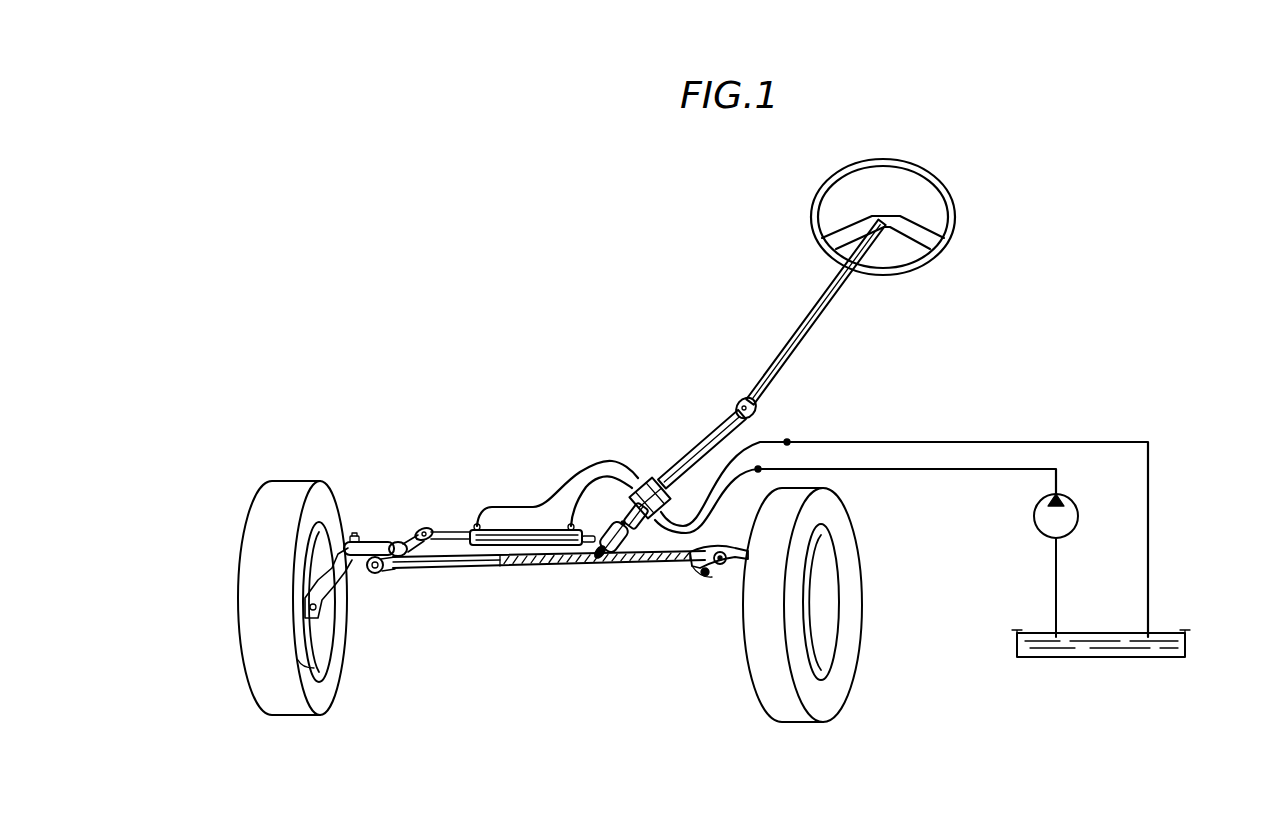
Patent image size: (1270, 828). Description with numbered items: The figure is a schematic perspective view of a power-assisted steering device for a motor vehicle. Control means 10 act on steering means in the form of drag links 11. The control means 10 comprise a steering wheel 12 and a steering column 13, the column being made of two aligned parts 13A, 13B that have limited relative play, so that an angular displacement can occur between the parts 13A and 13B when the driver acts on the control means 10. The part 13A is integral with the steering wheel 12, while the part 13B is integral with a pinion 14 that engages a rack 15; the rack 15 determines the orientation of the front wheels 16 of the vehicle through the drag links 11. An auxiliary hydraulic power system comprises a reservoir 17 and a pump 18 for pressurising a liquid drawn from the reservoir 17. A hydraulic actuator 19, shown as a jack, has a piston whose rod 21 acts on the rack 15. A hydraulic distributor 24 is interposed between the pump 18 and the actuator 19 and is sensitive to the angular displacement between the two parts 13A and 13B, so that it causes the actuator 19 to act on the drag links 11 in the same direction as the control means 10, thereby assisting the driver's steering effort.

The control means 10 is at (741, 360).
The drag links 11 is at (381, 538).
The steering wheel 12 is at (948, 197).
The steering column 13 is at (815, 312).
The steering column part 13A is at (714, 446).
The steering column part 13B is at (637, 537).
The pinion 14 is at (605, 566).
The rack 15 is at (512, 567).
The front wheels 16 is at (240, 520).
The reservoir 17 is at (1185, 660).
The pump 18 is at (1076, 508).
The hydraulic actuator 19 is at (548, 527).
The rod 21 is at (445, 526).
The hydraulic distributor 24 is at (657, 477).